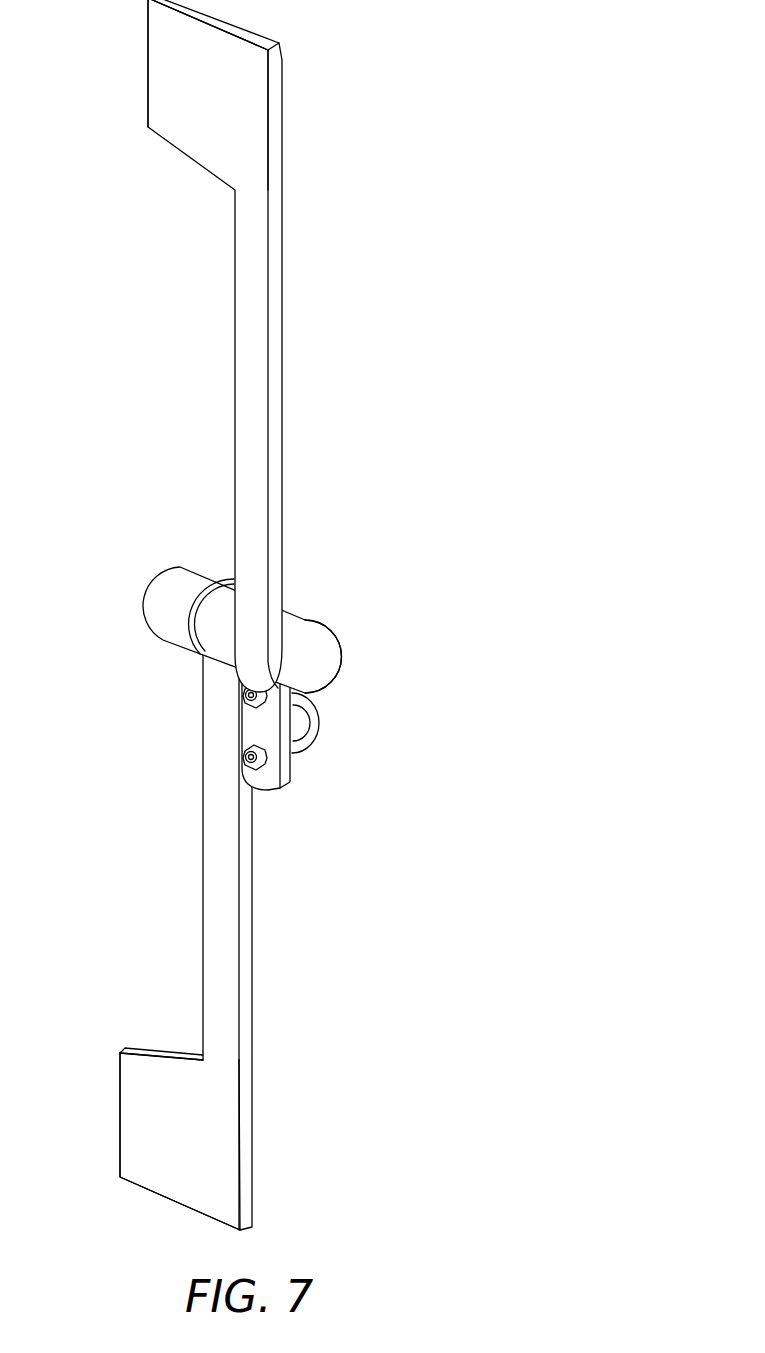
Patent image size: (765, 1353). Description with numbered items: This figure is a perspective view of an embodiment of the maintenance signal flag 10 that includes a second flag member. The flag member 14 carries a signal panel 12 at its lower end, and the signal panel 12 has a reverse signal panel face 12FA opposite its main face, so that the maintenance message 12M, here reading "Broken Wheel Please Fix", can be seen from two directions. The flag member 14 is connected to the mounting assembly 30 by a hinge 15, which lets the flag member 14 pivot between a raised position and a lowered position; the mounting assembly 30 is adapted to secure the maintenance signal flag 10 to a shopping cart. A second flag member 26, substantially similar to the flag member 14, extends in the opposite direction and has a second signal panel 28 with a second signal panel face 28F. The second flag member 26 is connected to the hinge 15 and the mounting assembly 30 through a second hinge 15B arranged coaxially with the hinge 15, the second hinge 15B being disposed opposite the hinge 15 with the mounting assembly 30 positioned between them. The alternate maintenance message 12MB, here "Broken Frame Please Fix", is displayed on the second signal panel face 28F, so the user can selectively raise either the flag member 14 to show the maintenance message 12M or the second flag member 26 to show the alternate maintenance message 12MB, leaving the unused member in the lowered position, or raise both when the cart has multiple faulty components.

The maintenance signal flag 10 is at (308, 622).
The signal panel 12 is at (209, 947).
The reverse signal panel face 12FA is at (220, 1187).
The maintenance message 12M is at (172, 1183).
The alternate maintenance message 12MB is at (252, 97).
The flag member 14 is at (209, 947).
The hinge 15 is at (258, 612).
The second hinge 15B is at (310, 650).
The second flag member 26 is at (271, 346).
The second signal panel 28 is at (271, 102).
The second signal panel face 28F is at (253, 57).
The mounting assembly 30 is at (291, 786).